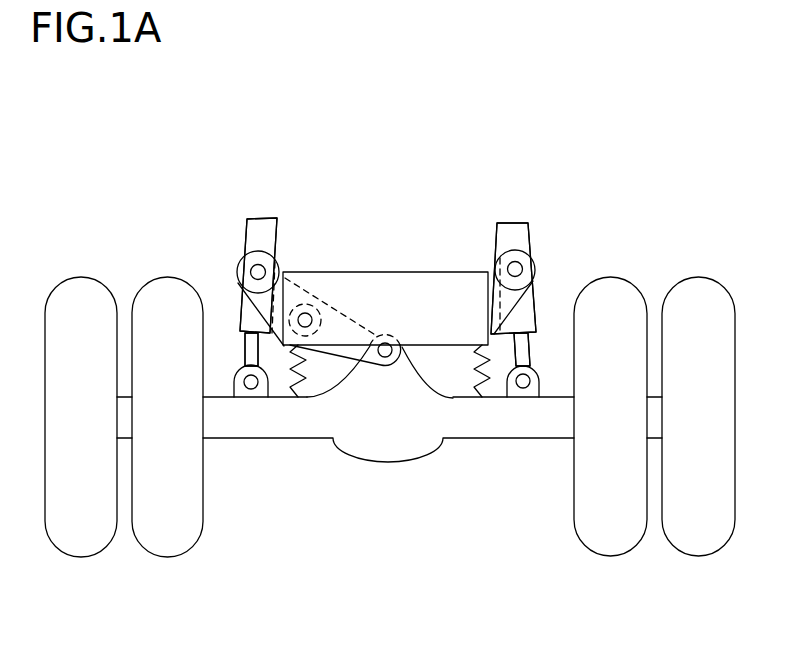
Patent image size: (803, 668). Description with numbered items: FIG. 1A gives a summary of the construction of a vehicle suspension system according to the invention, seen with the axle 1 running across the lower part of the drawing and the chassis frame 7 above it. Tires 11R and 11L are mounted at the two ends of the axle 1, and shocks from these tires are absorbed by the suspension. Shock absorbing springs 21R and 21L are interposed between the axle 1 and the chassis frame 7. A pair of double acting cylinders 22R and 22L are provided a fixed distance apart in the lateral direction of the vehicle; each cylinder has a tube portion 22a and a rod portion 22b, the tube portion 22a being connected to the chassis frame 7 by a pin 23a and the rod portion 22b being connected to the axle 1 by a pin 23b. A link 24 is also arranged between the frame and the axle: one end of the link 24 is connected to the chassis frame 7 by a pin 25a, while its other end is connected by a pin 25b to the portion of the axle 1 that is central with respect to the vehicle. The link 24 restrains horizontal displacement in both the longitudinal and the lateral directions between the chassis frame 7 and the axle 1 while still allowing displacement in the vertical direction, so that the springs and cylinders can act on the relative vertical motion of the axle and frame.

The axle 1 is at (364, 462).
The chassis frame 7 is at (417, 272).
The tire 11R is at (92, 523).
The tire 11L is at (700, 303).
The shock absorbing spring 21R is at (297, 400).
The shock absorbing spring 21L is at (482, 400).
The double acting cylinder 22R is at (262, 217).
The double acting cylinder 22L is at (523, 222).
The tube portion 22a is at (253, 232).
The rod portion 22b is at (239, 332).
The pin 23a is at (252, 267).
The pin 23b is at (250, 392).
The link 24 is at (358, 320).
The pin 25a is at (305, 312).
The pin 25b is at (387, 360).